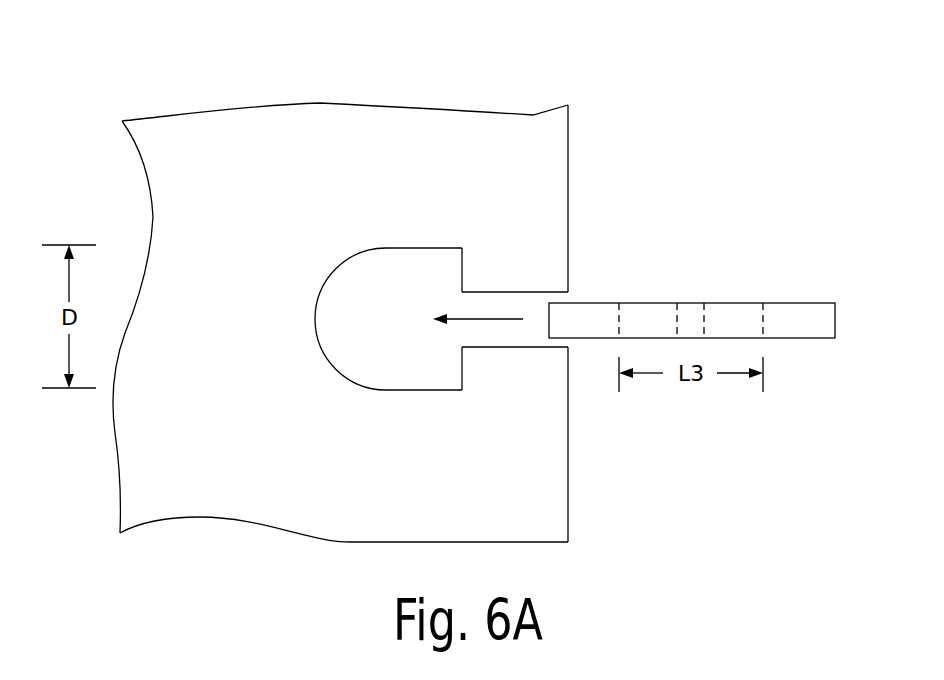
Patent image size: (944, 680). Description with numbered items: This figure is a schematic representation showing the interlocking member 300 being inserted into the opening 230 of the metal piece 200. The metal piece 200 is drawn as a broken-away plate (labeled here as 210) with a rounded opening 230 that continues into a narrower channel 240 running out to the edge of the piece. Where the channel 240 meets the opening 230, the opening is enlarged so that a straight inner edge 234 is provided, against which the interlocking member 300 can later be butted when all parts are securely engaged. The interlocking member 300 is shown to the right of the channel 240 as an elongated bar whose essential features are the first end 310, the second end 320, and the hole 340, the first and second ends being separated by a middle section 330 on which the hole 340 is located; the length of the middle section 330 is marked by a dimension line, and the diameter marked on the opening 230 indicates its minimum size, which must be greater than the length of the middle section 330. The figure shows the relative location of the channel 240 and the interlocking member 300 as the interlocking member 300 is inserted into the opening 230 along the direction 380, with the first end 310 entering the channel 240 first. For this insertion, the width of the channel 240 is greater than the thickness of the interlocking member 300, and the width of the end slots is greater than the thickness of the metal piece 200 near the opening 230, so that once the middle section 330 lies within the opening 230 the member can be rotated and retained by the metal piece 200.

The metal piece 200 is at (437, 62).
The workpiece body 210 is at (248, 306).
The opening 230 is at (390, 270).
The inner edge 234 is at (463, 272).
The channel 240 is at (487, 302).
The interlocking member 300 is at (784, 364).
The first end 310 is at (583, 303).
The second end 320 is at (798, 303).
The middle section 330 is at (655, 303).
The hole 340 is at (692, 303).
The direction 380 is at (472, 322).